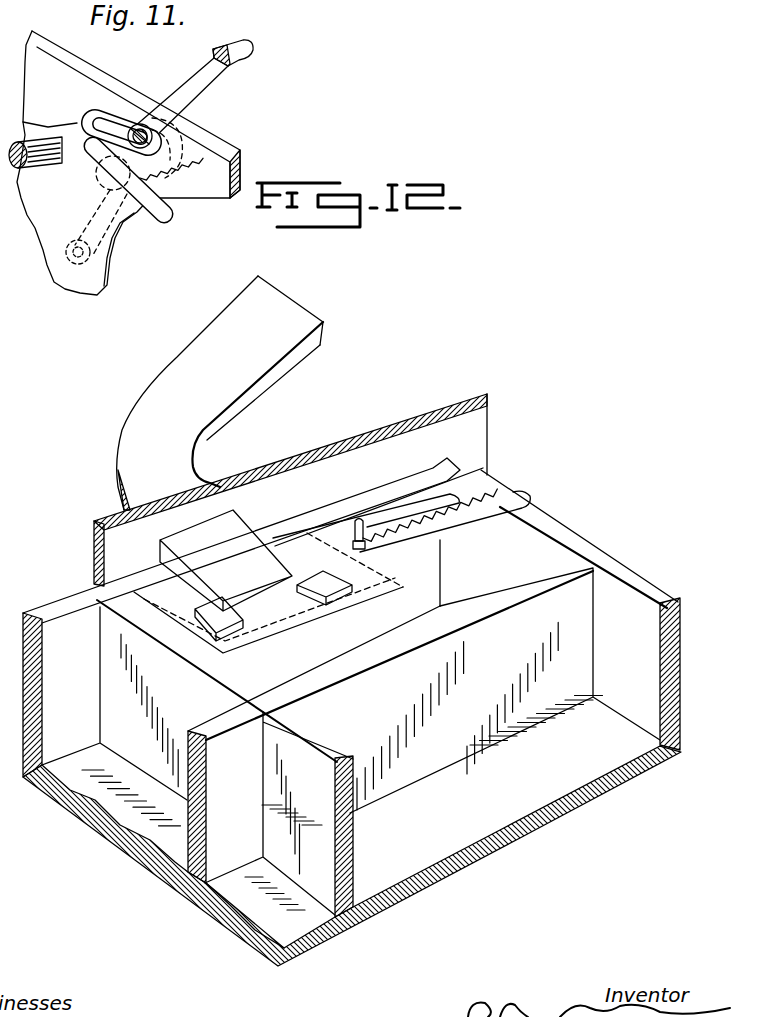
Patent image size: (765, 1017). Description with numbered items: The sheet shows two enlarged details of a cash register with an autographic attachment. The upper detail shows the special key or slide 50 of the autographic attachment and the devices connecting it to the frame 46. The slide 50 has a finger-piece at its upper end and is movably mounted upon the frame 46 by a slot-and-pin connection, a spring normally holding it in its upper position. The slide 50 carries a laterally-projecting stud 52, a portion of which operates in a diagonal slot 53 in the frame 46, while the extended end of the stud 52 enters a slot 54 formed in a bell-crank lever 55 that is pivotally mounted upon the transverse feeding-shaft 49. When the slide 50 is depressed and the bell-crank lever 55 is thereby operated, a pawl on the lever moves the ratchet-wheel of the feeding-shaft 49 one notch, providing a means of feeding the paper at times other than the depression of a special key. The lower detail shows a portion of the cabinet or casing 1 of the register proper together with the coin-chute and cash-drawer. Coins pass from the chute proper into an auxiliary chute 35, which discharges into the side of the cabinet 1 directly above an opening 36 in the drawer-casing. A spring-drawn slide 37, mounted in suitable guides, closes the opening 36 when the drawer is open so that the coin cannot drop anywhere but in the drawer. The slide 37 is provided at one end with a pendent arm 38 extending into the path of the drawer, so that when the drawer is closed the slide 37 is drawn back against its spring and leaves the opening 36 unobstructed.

In FIG. 12, the cabinet or casing 1 is at (352, 680).
In FIG. 12, the auxiliary chute 35 is at (220, 393).
In FIG. 12, the opening 36 is at (188, 579).
In FIG. 12, the spring-drawn slide 37 is at (417, 538).
In FIG. 12, the pendent arm 38 is at (531, 502).
In FIG. 11, the frame 46 is at (107, 232).
In FIG. 11, the feeding-shaft 49 is at (35, 142).
In FIG. 11, the slide 50 is at (220, 95).
In FIG. 11, the laterally-projecting stud 52 is at (168, 148).
In FIG. 11, the diagonal slot 53 is at (120, 168).
In FIG. 11, the slot 54 is at (113, 126).
In FIG. 11, the bell-crank lever 55 is at (115, 180).